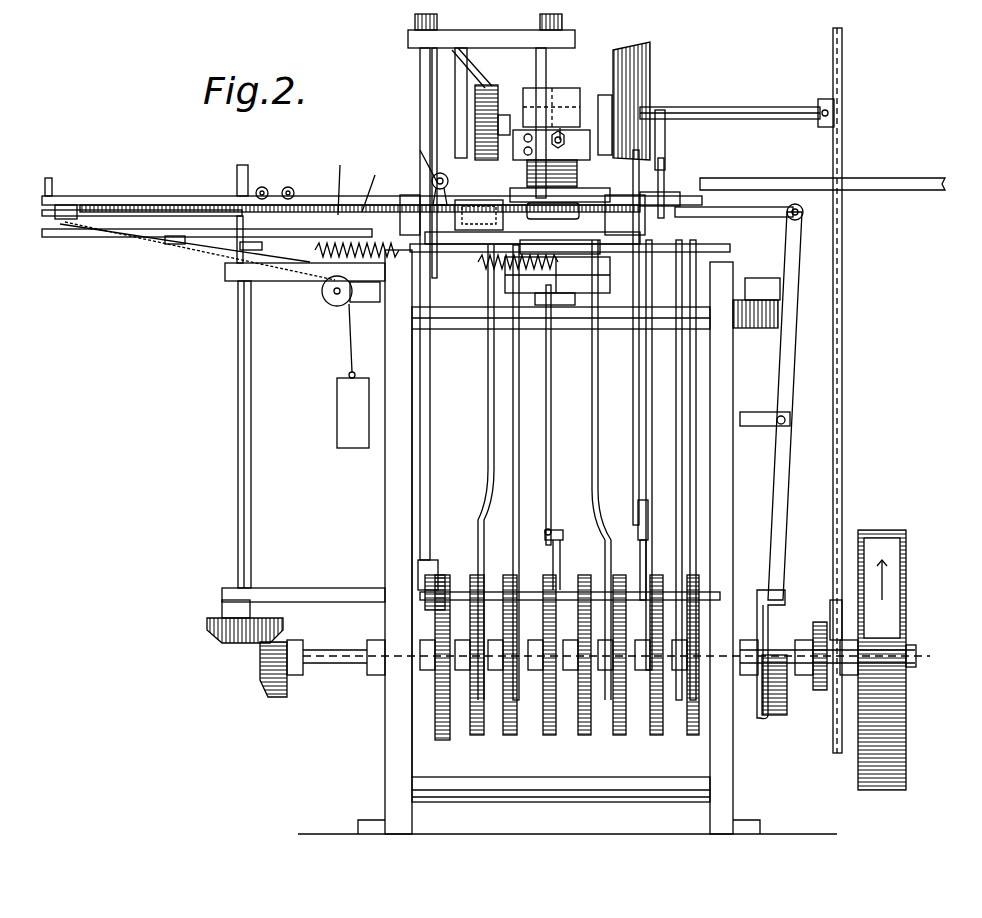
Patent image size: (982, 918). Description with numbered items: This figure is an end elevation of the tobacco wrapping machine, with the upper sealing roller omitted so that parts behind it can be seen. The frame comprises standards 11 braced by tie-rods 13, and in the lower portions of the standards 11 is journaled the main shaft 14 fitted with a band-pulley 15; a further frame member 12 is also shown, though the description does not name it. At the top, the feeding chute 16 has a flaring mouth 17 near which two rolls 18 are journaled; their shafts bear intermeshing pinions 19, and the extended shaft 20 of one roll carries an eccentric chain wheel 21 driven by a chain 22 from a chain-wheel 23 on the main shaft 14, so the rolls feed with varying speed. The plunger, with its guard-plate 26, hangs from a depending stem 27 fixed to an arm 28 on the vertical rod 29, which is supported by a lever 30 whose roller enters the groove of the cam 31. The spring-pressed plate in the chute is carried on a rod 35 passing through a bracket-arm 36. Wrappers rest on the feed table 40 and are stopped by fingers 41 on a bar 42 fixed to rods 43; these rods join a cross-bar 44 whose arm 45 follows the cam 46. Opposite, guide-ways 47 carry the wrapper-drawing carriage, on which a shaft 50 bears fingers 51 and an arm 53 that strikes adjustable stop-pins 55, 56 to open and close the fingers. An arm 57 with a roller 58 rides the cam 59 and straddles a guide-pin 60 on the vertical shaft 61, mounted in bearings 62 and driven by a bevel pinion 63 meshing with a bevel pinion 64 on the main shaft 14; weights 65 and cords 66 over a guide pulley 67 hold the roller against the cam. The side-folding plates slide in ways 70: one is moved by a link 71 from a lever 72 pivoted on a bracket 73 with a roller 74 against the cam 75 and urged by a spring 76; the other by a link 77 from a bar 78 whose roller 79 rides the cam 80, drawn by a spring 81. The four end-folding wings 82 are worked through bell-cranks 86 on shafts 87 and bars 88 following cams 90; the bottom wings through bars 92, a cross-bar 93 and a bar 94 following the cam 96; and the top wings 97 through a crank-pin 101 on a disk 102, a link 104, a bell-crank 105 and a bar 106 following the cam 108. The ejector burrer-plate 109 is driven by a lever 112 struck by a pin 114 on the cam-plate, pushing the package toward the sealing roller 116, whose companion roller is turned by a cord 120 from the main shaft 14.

The standards 11 is at (388, 508).
The cross bar 12 is at (458, 590).
The tie-rods 13 is at (460, 325).
The main shaft 14 is at (342, 668).
The band-pulley 15 is at (882, 660).
The tube or chute 16 is at (551, 145).
The flaring mouth 17 is at (470, 80).
The rolls 18 is at (552, 173).
The intermeshing pinions 19 is at (478, 130).
The extended shaft 20 is at (798, 110).
The eccentric chain wheel 21 is at (840, 88).
The chain 22 is at (842, 410).
The chain-wheel 23 is at (835, 580).
The guard-plate 26 is at (540, 100).
The depending stem 27 is at (545, 60).
The arm 28 is at (493, 42).
The rod 29 is at (424, 70).
The lever 30 is at (432, 562).
The cam 31 is at (437, 690).
The rod 35 is at (566, 140).
The bracket-arm 36 is at (562, 128).
The feed table 40 is at (876, 184).
The fingers 41 is at (645, 168).
The bar 42 is at (660, 175).
The rods 43 is at (632, 438).
The cross-bar 44 is at (645, 500).
The arm 45 is at (644, 535).
The cam 46 is at (655, 735).
The guide-ways 47 is at (308, 204).
The shaft 50 is at (438, 176).
The fingers 51 is at (470, 186).
The arm 53 is at (411, 166).
The adjustable stop-pin 55 is at (405, 200).
The adjustable stop-pin 56 is at (655, 192).
The arm 57 is at (118, 200).
The roller 58 is at (55, 212).
The cam 59 is at (155, 206).
The guide-pin 60 is at (238, 175).
The vertical shaft 61 is at (240, 420).
The bearings 62 is at (278, 270).
The bevel pinion 63 is at (230, 640).
The bevel pinion 64 is at (262, 672).
The weights 65 is at (353, 413).
The cords 66 is at (351, 348).
The guide pulley 67 is at (330, 298).
The ways 70 is at (458, 222).
The link 71 is at (770, 215).
The lever 72 is at (785, 355).
The bracket 73 is at (750, 420).
The roller 74 is at (785, 598).
The cam 75 is at (775, 655).
The spring 76 is at (756, 303).
The link 77 is at (345, 228).
The bar 78 is at (110, 237).
The roller 79 is at (175, 246).
The cam 80 is at (240, 248).
The spring 81 is at (455, 250).
The wings 82 is at (479, 215).
The bell-crank 86 is at (557, 275).
The shafts 87 is at (540, 306).
The bar 88 is at (594, 430).
The cam 90 is at (476, 738).
The bar 92 is at (548, 372).
The cross-bar 93 is at (556, 530).
The bar 94 is at (556, 552).
The cam 96 is at (548, 738).
The wings 97 is at (560, 194).
The crank-pin 101 is at (648, 105).
The disk 102 is at (605, 100).
The link 104 is at (640, 118).
The bell-crank 105 is at (658, 228).
The bar 106 is at (672, 355).
The cam 108 is at (692, 738).
The burrer-plate 109 is at (553, 211).
The lever 112 is at (334, 181).
The pin 114 is at (368, 184).
The roller 116 is at (560, 246).
The cord 120 is at (818, 695).